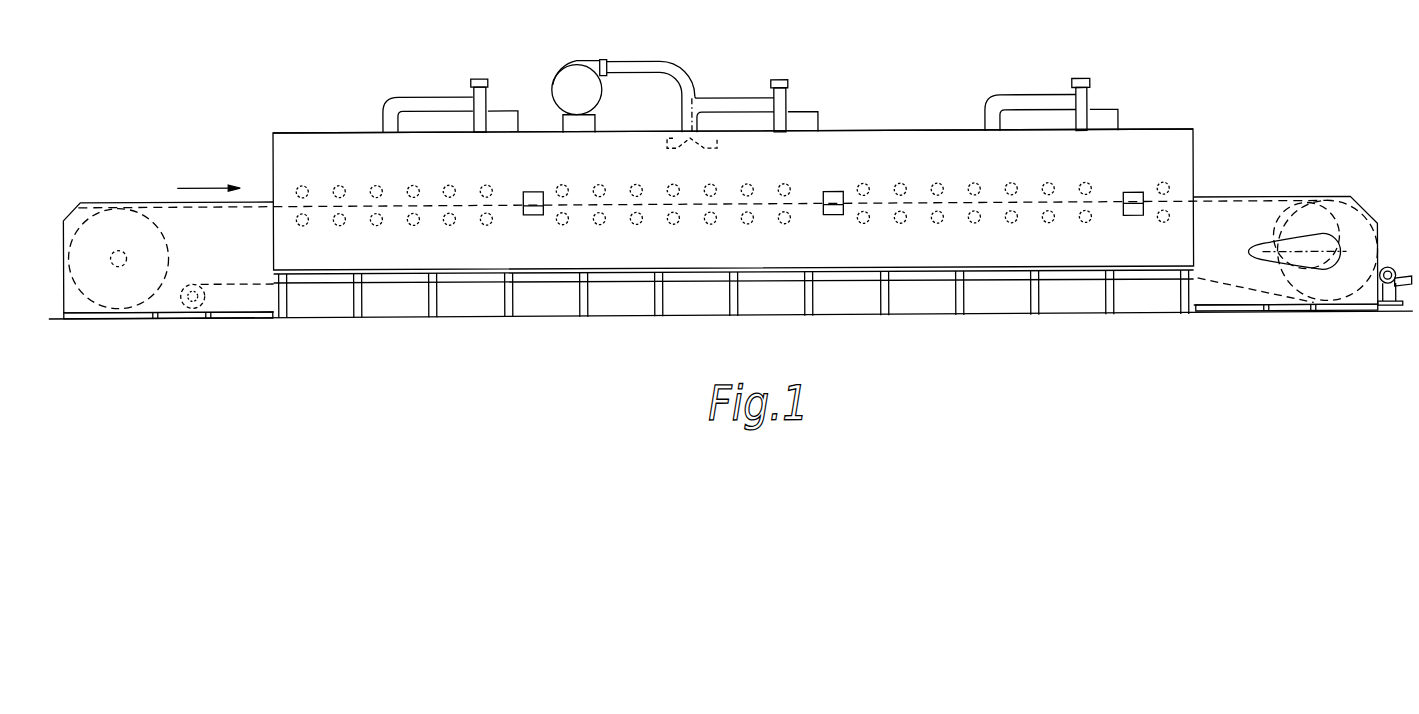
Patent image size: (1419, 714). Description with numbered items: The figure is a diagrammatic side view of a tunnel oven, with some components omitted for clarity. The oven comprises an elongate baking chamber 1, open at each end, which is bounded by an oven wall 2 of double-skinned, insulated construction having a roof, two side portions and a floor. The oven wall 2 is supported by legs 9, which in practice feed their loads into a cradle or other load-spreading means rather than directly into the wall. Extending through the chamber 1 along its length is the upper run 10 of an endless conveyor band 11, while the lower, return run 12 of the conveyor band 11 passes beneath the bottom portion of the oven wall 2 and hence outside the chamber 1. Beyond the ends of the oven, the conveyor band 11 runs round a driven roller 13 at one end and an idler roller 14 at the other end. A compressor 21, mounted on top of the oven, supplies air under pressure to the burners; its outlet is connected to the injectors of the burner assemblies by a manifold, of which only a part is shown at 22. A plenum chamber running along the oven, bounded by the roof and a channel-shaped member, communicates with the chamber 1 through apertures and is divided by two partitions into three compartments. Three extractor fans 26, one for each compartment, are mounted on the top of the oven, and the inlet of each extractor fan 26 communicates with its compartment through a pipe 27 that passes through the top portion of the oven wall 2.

The baking chamber 1 is at (893, 170).
The oven wall 2 is at (1204, 142).
The legs 9 is at (358, 305).
The upper run 10 is at (912, 205).
The endless conveyor band 11 is at (1254, 180).
The lower return run 12 is at (1240, 292).
The driven roller 13 is at (1334, 225).
The idler roller 14 is at (114, 228).
The compressor 21 is at (590, 105).
The manifold 22 is at (668, 132).
The extractor fans 26 is at (488, 102).
The pipe 27 is at (418, 102).